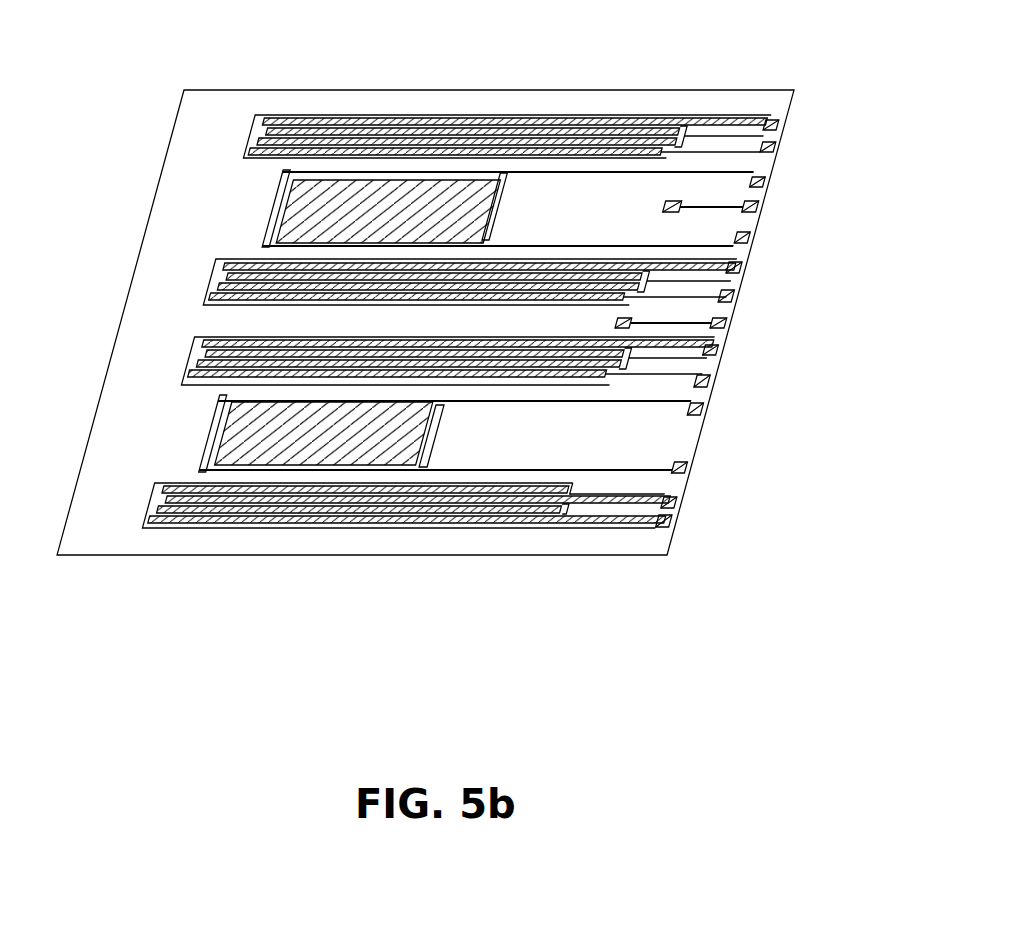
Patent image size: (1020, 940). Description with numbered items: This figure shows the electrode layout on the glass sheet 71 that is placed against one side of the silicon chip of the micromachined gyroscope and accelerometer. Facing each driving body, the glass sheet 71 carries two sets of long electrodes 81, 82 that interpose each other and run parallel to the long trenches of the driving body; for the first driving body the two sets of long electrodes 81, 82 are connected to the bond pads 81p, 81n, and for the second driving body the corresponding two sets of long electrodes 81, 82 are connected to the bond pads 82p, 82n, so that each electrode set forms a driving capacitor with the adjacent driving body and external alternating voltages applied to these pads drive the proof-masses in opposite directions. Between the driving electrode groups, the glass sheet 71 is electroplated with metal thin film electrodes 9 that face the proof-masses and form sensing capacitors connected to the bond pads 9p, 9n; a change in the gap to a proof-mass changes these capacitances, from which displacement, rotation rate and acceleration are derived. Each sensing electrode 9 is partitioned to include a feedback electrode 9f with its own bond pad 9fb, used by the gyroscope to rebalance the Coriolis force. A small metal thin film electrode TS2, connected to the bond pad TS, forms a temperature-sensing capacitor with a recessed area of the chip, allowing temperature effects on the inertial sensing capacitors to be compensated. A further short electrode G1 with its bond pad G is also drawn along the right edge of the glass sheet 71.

The glass sheet 71 is at (115, 366).
The long electrode 81 is at (523, 138).
The long electrode 82 is at (442, 138).
The bond pad 81p is at (778, 126).
The bond pad 81n is at (780, 148).
The bond pad 82p is at (742, 267).
The bond pad 82n is at (733, 296).
The metal thin film electrode 9 is at (293, 185).
The feedback electrode 9f is at (270, 213).
The bond pad 9p is at (750, 238).
The bond pad 9n is at (702, 410).
The bond pad 9fb is at (687, 467).
The bond pad TS is at (757, 207).
The metal thin film electrode TS2 is at (657, 207).
The ground pad G is at (725, 324).
The ground line G1 is at (615, 323).